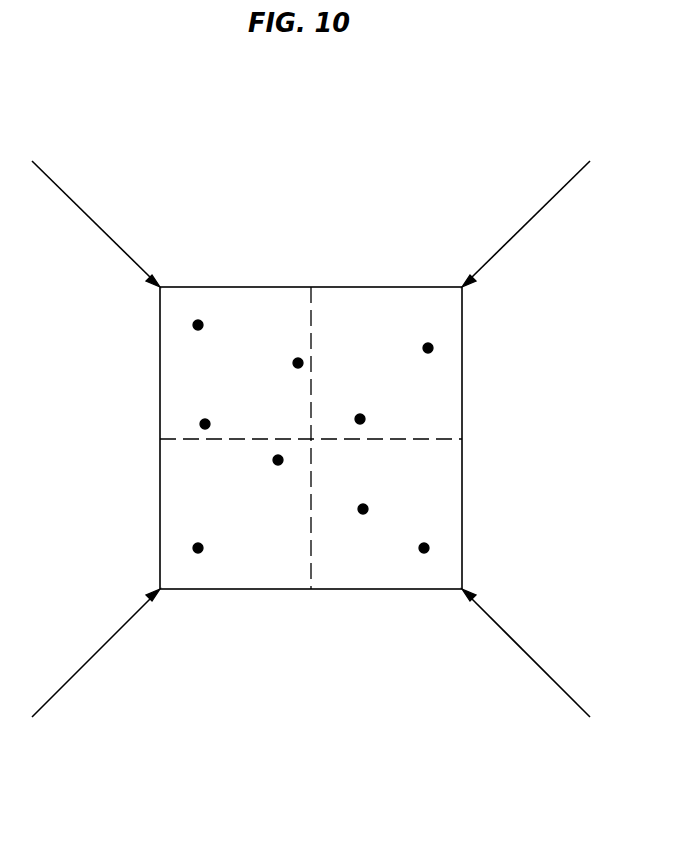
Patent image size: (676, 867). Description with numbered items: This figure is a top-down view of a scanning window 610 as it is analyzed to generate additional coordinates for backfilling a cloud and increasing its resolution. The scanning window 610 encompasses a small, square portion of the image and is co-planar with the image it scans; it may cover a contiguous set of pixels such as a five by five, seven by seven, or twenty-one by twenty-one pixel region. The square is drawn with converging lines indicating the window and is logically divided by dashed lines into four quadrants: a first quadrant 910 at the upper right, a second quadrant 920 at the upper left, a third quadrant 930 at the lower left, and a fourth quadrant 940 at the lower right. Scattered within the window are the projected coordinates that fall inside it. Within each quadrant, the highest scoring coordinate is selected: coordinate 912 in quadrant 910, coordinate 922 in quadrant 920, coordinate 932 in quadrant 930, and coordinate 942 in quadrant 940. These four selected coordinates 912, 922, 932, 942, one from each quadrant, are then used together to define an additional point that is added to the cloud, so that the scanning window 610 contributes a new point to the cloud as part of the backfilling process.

The scanning window 610 is at (422, 122).
The quadrant 910 is at (391, 288).
The highest scoring coordinate 912 is at (428, 348).
The quadrant 920 is at (160, 360).
The highest scoring coordinate 922 is at (205, 424).
The quadrant 930 is at (160, 514).
The highest scoring coordinate 932 is at (278, 460).
The quadrant 940 is at (462, 508).
The highest scoring coordinate 942 is at (363, 509).